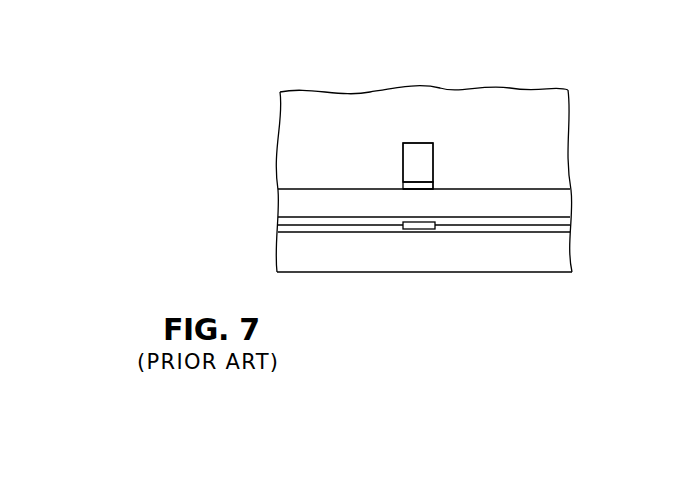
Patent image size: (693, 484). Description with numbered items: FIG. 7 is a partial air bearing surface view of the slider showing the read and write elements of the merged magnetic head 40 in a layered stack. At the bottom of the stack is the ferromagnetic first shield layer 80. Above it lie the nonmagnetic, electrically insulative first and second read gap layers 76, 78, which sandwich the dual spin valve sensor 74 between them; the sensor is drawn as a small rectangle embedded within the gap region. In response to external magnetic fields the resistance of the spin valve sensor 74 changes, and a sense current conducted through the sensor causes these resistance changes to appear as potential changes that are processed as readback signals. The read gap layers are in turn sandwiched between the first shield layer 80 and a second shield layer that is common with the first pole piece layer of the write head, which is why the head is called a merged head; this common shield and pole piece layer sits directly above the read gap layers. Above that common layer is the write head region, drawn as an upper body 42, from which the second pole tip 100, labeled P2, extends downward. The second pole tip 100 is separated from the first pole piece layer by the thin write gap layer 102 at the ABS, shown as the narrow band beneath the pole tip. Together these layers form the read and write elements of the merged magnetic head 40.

The merged magnetic head 40 is at (588, 103).
The upper dielectric layer 42 is at (280, 120).
The second pole tip 100 is at (424, 148).
The write gap layer 102 is at (418, 185).
The second polysilicon layer P2 is at (433, 160).
The first shield layer 80 is at (562, 253).
The dual spin valve sensor 74 is at (416, 229).
The first read gap layer 76 is at (333, 232).
The second read gap layer 78 is at (535, 220).